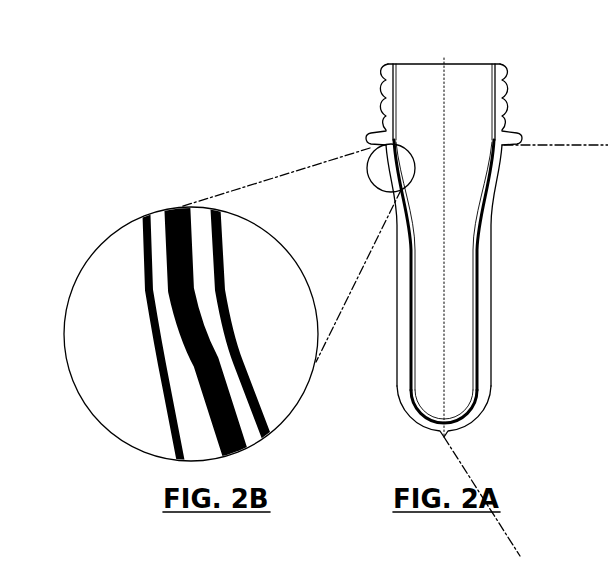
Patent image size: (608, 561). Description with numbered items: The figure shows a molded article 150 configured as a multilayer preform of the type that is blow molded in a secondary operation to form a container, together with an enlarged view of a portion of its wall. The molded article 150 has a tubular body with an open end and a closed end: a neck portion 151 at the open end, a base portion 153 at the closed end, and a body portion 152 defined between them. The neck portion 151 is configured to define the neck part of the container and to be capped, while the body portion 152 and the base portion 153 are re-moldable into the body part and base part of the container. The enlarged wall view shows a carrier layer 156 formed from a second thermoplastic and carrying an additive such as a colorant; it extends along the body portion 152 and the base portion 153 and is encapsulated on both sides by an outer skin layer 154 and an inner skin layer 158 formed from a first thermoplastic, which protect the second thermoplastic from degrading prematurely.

In FIG. 2A, the molded article 150 is at (342, 80).
In FIG. 2A, the neck portion 151 is at (536, 60).
In FIG. 2A, the body portion 152 is at (536, 165).
In FIG. 2A, the base portion 153 is at (536, 393).
In FIG. 2B, the outer skin layer 154 is at (158, 252).
In FIG. 2B, the carrier layer 156 is at (168, 308).
In FIG. 2B, the inner skin layer 158 is at (198, 270).